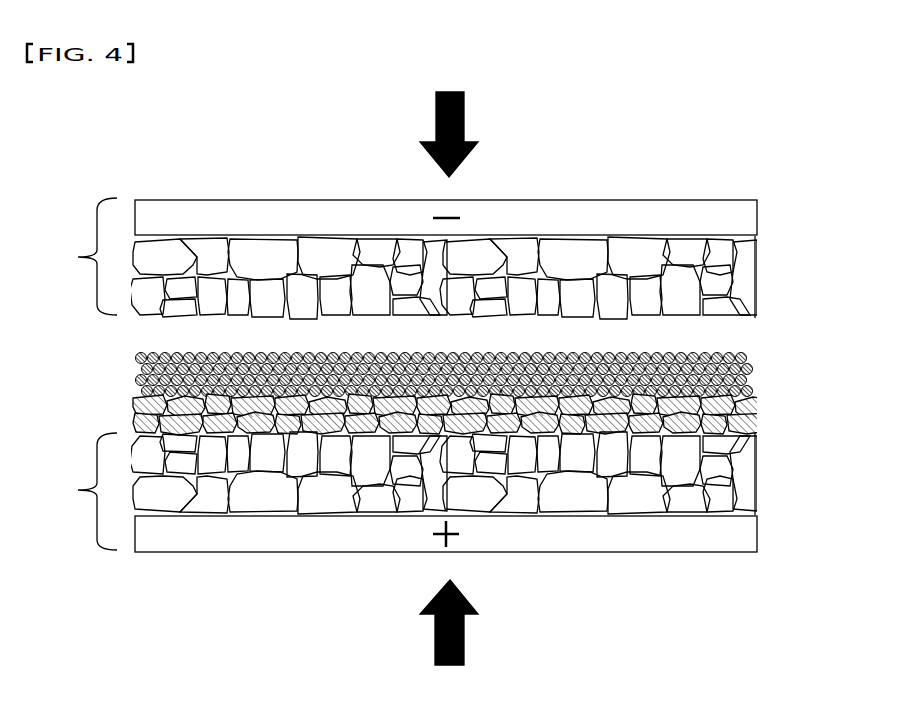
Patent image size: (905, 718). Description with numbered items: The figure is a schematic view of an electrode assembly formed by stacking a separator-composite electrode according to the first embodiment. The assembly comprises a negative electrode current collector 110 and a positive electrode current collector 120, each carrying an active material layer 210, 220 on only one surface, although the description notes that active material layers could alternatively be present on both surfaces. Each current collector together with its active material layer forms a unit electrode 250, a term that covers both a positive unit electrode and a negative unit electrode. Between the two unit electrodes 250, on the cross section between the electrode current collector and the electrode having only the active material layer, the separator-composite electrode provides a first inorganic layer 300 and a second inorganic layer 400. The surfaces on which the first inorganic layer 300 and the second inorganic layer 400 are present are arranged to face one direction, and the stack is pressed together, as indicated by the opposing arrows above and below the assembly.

The negative electrode current collector 110 is at (752, 221).
The positive electrode current collector 120 is at (757, 539).
The active material layer 210 is at (758, 274).
The active material layer 220 is at (757, 479).
The unit electrode 250 is at (78, 257).
The first inorganic layer 300 is at (753, 421).
The second inorganic layer 400 is at (743, 363).